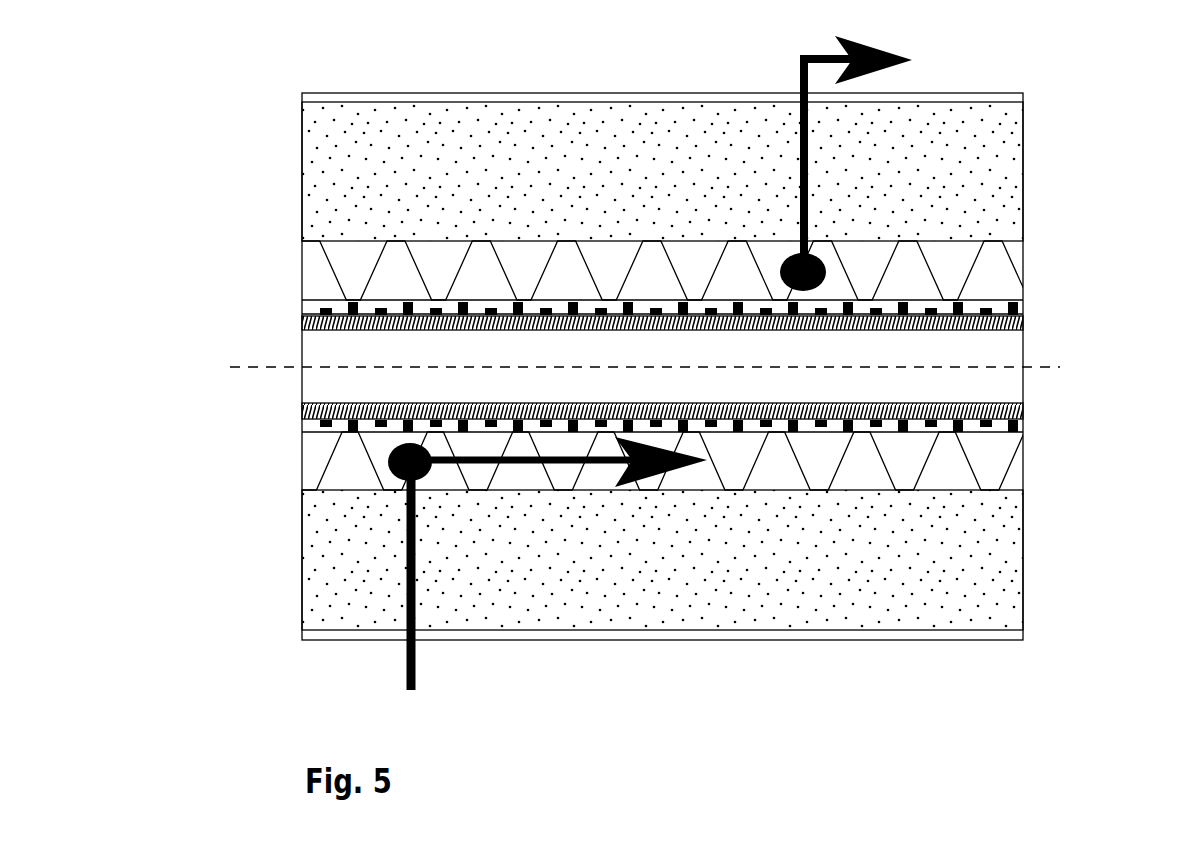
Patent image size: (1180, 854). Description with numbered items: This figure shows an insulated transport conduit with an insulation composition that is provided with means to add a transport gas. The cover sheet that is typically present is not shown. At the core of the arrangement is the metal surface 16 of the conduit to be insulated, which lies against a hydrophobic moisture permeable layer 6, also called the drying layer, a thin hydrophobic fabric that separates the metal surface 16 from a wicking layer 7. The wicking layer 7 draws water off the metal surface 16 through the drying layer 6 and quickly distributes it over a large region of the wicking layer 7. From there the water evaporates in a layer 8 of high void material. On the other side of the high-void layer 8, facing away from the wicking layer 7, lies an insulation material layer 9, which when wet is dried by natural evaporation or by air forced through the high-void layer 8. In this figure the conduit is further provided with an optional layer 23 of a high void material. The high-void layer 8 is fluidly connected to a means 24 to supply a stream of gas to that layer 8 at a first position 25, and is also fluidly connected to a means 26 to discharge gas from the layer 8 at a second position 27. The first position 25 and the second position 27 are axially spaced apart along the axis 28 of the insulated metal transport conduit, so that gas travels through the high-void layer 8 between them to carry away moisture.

The hydrophobic moisture permeable layer 6 is at (1025, 420).
The wicking layer 7 is at (1025, 428).
The layer of high void material 8 is at (995, 463).
The insulation material layer 9 is at (995, 593).
The metal surface 16 is at (993, 328).
The optional layer of high void material 23 is at (995, 635).
The means to supply a stream of gas 24 is at (405, 678).
The first position 25 is at (390, 465).
The means to discharge gas 26 is at (886, 152).
The second position 27 is at (822, 262).
The axis 28 is at (671, 368).